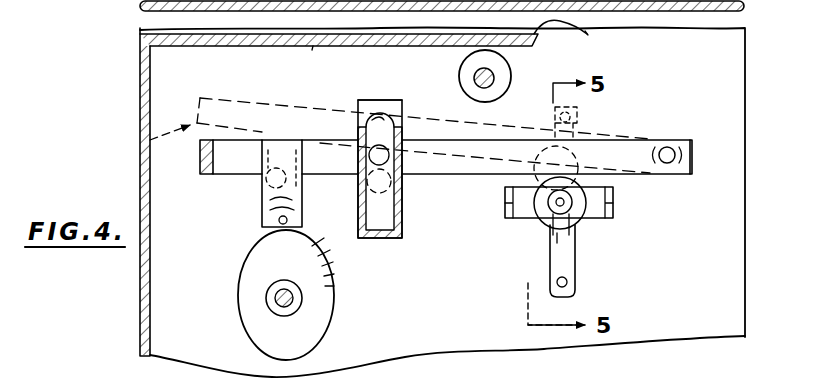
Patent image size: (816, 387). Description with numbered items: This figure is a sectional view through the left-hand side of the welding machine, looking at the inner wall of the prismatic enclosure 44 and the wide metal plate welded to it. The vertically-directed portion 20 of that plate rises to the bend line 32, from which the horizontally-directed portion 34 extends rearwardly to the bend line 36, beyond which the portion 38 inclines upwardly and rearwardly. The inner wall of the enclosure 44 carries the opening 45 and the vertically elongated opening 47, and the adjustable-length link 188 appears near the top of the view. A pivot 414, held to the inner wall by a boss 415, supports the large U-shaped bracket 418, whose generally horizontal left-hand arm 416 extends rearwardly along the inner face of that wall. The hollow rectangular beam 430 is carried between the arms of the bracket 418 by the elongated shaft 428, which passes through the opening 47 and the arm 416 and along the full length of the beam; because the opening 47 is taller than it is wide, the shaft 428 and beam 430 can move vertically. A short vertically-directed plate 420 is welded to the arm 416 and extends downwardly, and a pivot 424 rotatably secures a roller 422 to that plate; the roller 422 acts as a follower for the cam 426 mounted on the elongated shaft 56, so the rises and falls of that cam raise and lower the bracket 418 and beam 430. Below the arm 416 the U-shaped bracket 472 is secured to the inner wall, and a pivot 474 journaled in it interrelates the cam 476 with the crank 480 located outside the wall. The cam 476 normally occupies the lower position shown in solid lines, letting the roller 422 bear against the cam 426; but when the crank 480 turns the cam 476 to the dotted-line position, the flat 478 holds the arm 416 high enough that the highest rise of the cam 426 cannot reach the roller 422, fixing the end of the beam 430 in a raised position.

The vertically-directed portion 20 is at (140, 122).
The bend line 32 is at (140, 39).
The horizontally-directed portion 34 is at (312, 50).
The bend line 36 is at (546, 40).
The upwardly and rearwardly inclined portion 38 is at (595, 43).
The prismatic enclosure 44 is at (480, 348).
The opening 45 is at (460, 64).
The opening 47 is at (371, 100).
The elongated shaft 56 is at (268, 296).
The adjustable-length link 188 is at (493, 78).
The pivot 414 is at (667, 168).
The boss 415 is at (693, 148).
The left-hand arm 416 is at (616, 136).
The U-shaped bracket 418 is at (196, 161).
The vertically-directed plate 420 is at (262, 196).
The roller 422 is at (264, 232).
The pivot 424 is at (299, 218).
The cam 426 is at (333, 343).
The elongated shaft 428 is at (398, 112).
The hollow beam 430 is at (398, 225).
The U-shaped bracket 472 is at (607, 222).
The pivot 474 is at (553, 208).
The cam 476 is at (585, 233).
The flat 478 is at (552, 252).
The crank 480 is at (568, 283).